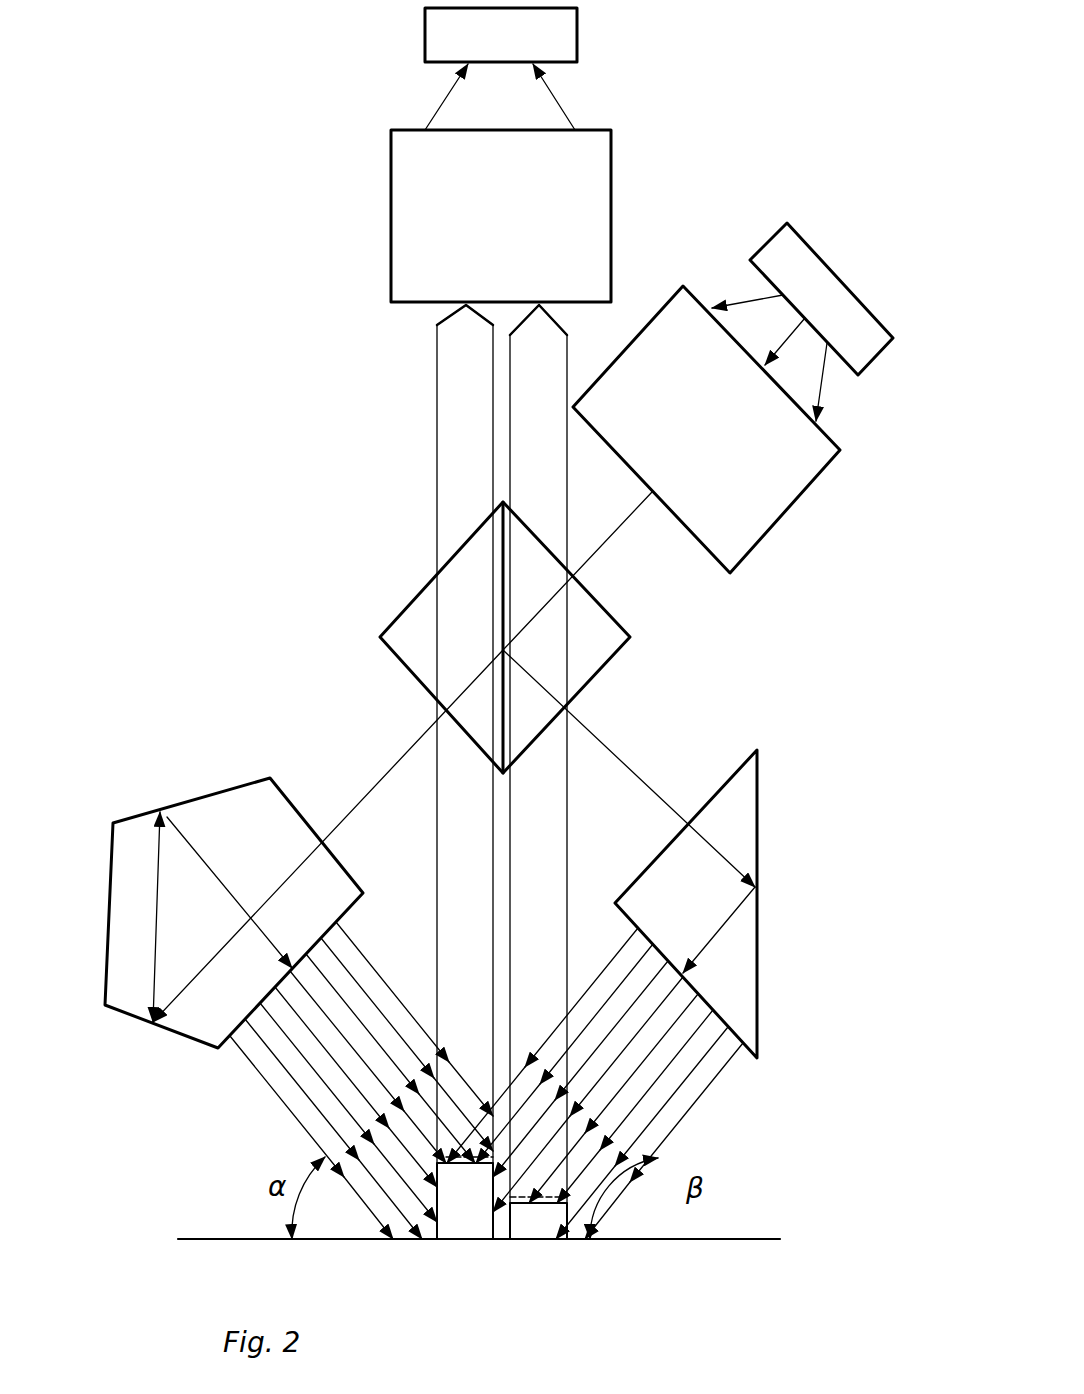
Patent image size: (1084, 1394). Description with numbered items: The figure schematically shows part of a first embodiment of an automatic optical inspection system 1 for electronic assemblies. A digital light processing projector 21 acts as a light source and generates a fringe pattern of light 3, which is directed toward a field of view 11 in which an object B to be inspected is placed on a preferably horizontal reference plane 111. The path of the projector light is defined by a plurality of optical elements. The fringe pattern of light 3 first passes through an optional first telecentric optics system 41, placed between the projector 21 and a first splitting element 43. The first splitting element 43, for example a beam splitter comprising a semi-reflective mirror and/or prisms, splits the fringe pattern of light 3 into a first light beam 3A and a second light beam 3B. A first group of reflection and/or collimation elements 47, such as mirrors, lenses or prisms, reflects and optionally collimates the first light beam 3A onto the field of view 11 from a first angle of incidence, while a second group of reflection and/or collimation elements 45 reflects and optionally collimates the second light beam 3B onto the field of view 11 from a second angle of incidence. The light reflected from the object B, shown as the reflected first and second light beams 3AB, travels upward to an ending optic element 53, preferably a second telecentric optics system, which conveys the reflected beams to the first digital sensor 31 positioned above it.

The automatic optical inspection system 1 is at (198, 162).
The digital sensor 31 is at (551, 31).
The ending optic element 53 is at (445, 212).
The reflected first and second light beams 3AB is at (562, 98).
The digital light processing projector 21 is at (830, 307).
The first telecentric optics system 41 is at (745, 473).
The fringe pattern of light 3 is at (785, 338).
The first splitting element 43 is at (458, 635).
The first group of reflection and/or collimation elements 47 is at (235, 832).
The first light beam 3A is at (390, 760).
The second group of reflection and/or collimation elements 45 is at (728, 820).
The second light beam 3B is at (715, 857).
The reference plane 111 is at (748, 1239).
The field of view 11 is at (597, 1207).
The object to be inspected B is at (536, 1240).